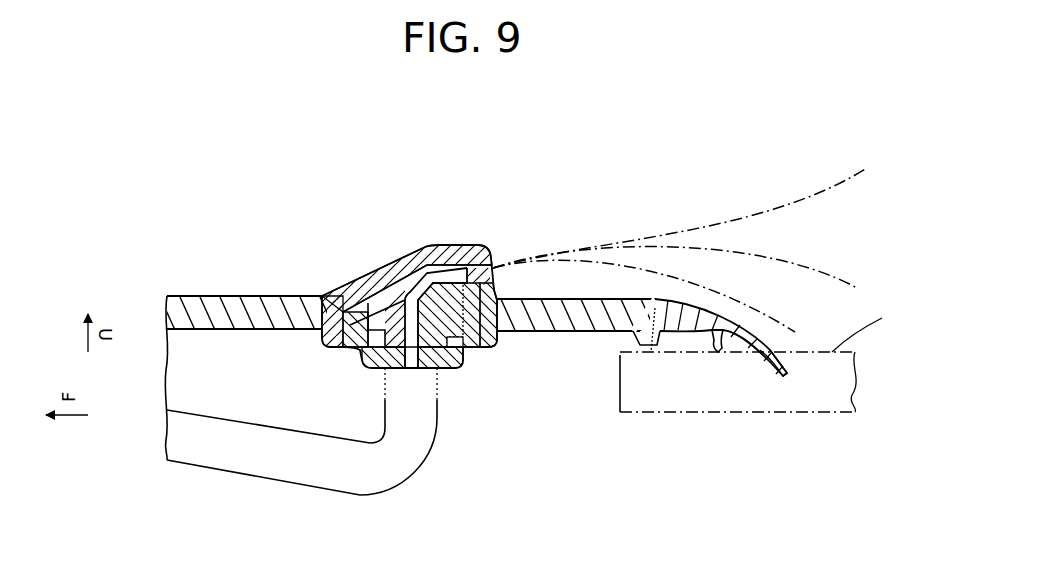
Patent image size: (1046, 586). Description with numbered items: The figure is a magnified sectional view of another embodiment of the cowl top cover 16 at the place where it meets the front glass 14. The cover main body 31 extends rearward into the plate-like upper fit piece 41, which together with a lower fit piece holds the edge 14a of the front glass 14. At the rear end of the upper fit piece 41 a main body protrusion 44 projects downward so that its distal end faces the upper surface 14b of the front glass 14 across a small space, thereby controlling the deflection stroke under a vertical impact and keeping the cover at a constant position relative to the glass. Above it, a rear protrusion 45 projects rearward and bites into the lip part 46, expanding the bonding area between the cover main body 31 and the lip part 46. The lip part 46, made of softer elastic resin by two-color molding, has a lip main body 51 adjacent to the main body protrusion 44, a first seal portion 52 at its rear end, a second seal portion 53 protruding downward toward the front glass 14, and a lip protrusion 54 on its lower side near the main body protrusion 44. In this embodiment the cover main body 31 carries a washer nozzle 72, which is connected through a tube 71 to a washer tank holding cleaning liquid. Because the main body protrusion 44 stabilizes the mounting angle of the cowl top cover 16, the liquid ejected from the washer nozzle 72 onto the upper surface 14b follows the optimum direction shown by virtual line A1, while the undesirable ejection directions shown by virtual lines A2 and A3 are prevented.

The cowl top cover 16 is at (387, 284).
The washer nozzle 72 is at (461, 244).
The cover main body 31 is at (196, 295).
The upper fit piece 41 is at (294, 297).
The rear protrusion 45 is at (655, 305).
The main body protrusion 44 is at (627, 347).
The front glass 14 is at (850, 352).
The edge of the front glass 14a is at (620, 377).
The upper surface of the front glass 14b is at (874, 329).
The lip protrusion 54 is at (652, 352).
The lip main body 51 is at (693, 332).
The second seal portion 53 is at (718, 352).
The lip part 46 is at (764, 370).
The first seal portion 52 is at (783, 378).
The tube 71 is at (336, 496).
The virtual line A1 is at (810, 267).
The virtual line A2 is at (798, 330).
The virtual line A3 is at (803, 203).